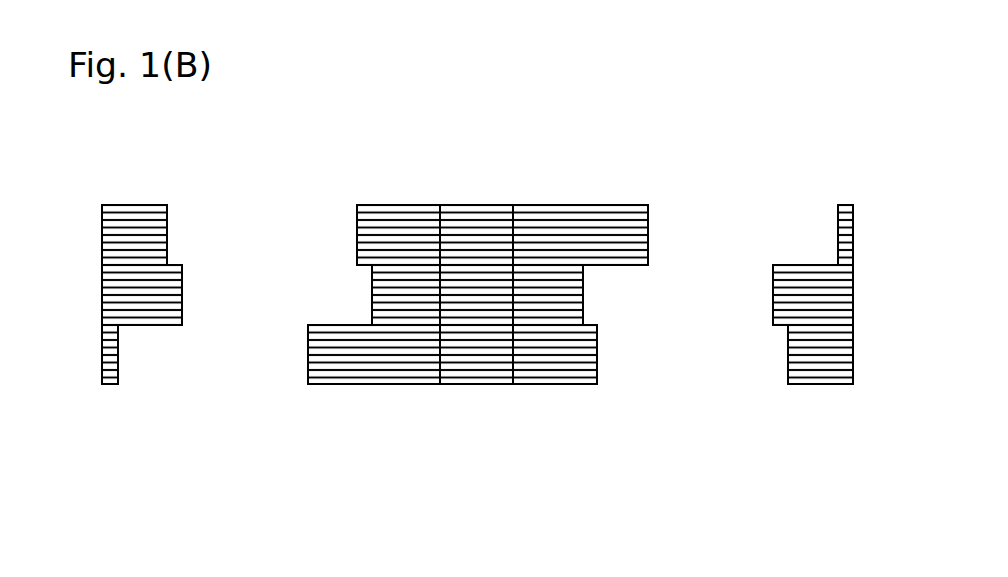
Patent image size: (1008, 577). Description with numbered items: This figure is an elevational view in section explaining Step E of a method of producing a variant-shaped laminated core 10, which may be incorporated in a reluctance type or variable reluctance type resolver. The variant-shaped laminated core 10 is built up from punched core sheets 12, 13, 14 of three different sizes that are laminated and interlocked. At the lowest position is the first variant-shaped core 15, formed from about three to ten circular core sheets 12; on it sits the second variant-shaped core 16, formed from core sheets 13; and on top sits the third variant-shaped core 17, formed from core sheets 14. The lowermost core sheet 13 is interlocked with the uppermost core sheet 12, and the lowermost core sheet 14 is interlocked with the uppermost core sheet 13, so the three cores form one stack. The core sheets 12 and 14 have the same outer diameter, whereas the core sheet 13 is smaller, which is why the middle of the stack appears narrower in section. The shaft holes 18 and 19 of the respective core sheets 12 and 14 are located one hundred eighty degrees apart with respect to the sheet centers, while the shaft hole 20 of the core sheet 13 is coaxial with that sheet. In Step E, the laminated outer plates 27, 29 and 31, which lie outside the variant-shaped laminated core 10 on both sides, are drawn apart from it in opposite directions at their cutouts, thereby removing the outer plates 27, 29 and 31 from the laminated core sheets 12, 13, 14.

The variant-shaped laminated core 10 is at (486, 301).
The core sheet 12 is at (597, 326).
The core sheet 13 is at (583, 268).
The core sheet 14 is at (648, 262).
The first variant-shaped core 15 is at (305, 322).
The second variant-shaped core 16 is at (365, 307).
The third variant-shaped core 17 is at (363, 203).
The shaft hole 18 is at (468, 386).
The shaft hole 19 is at (460, 205).
The shaft hole 20 is at (490, 273).
The outer plate 27 is at (102, 330).
The outer plate 29 is at (102, 270).
The outer plate 31 is at (102, 210).